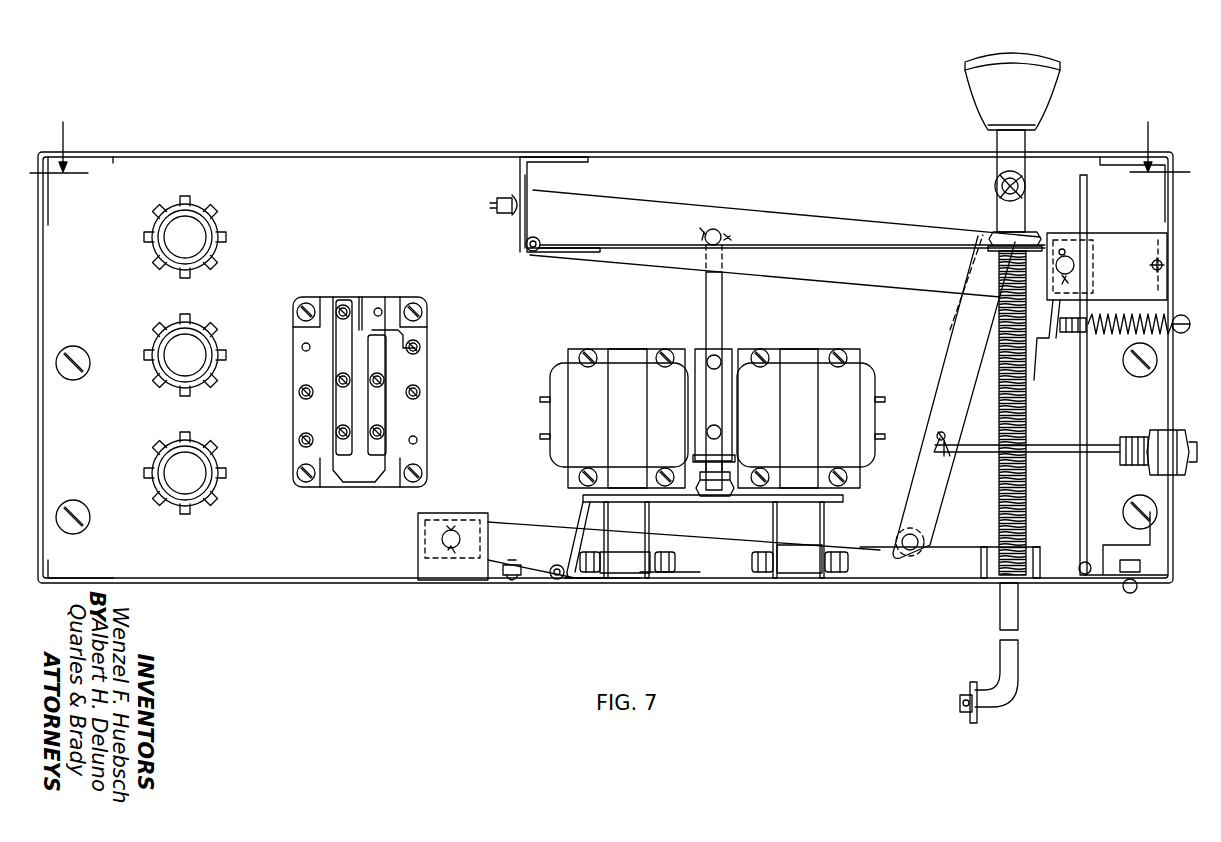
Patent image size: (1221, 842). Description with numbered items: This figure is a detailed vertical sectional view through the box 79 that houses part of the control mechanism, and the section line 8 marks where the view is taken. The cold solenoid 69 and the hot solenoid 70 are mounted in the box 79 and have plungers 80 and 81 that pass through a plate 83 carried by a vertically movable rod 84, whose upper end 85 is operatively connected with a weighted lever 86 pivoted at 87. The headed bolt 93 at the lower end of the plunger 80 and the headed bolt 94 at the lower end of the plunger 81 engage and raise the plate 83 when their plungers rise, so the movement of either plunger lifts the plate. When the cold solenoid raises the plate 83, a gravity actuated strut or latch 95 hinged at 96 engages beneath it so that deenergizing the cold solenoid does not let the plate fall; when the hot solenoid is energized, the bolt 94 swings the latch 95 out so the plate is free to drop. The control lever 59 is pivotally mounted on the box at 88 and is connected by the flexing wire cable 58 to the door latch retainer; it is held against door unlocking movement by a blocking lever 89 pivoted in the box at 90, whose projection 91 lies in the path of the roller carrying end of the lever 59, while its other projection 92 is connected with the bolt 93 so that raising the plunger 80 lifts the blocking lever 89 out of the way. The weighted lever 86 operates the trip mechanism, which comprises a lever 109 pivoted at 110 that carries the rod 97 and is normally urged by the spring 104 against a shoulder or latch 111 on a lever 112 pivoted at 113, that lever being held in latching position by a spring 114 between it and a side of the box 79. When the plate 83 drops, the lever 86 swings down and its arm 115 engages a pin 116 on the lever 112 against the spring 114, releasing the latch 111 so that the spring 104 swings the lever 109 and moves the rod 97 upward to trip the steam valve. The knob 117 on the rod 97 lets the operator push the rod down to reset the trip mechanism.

The section line 8- 8 is at (610, 136).
The box 79 is at (484, 151).
The knob 117 is at (1038, 99).
The upper end of rod 85 is at (713, 228).
The weighted lever 86 is at (789, 208).
The lever 109 is at (878, 232).
The pivot 88 is at (1002, 186).
The shoulder or latch 111 is at (1086, 240).
The pivot 87 is at (1074, 262).
The spring 114 is at (1150, 313).
The pivot 110 is at (524, 253).
The hot solenoid 70 is at (628, 349).
The vertically movable rod 84 is at (705, 303).
The cold solenoid 69 is at (803, 349).
The control lever 59 is at (957, 337).
The pin 116 is at (1070, 333).
The arm or projection 115 is at (1034, 380).
The lever 112 is at (1088, 407).
The flexing wire cable 58 is at (1068, 455).
The spring 104 is at (998, 513).
The plate 83 is at (845, 498).
The plunger 81 is at (642, 513).
The plunger 80 is at (815, 517).
The pivot 90 is at (448, 550).
The hinge or pivot 96 is at (557, 580).
The gravity actuated strut or latch 95 is at (632, 578).
The headed bolt 94 is at (672, 572).
The projection 92 is at (800, 578).
The headed bolt 93 is at (851, 578).
The blocking lever 89 is at (918, 572).
The projection 91 is at (979, 570).
The rod 97 is at (1022, 607).
The pivot 113 is at (1088, 580).